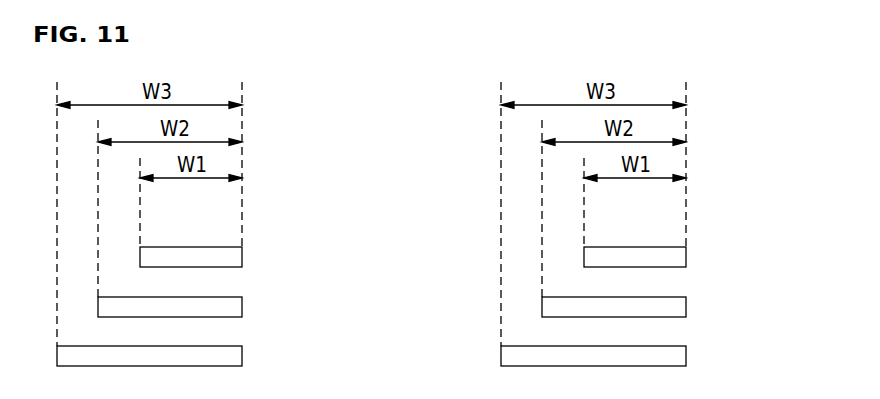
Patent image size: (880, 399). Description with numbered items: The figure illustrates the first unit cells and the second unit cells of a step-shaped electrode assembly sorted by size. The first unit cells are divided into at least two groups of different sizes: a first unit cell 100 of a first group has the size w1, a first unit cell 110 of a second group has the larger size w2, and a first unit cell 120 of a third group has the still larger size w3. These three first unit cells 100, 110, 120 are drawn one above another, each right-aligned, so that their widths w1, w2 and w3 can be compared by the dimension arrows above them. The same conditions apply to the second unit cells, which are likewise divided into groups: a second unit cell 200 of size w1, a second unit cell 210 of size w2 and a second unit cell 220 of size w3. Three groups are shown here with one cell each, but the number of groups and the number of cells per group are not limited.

The first unit cell of a first group 100 is at (243, 257).
The first unit cell of a second group 110 is at (243, 307).
The first unit cell of a third group 120 is at (243, 356).
The second unit cell of a first group 200 is at (687, 257).
The second unit cell of a second group 210 is at (687, 307).
The second unit cell of a third group 220 is at (687, 356).